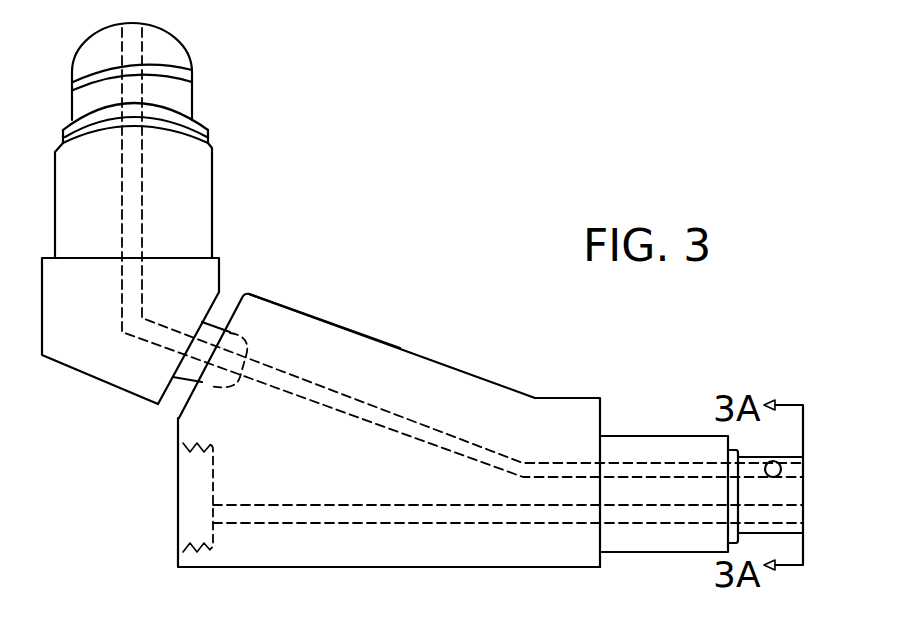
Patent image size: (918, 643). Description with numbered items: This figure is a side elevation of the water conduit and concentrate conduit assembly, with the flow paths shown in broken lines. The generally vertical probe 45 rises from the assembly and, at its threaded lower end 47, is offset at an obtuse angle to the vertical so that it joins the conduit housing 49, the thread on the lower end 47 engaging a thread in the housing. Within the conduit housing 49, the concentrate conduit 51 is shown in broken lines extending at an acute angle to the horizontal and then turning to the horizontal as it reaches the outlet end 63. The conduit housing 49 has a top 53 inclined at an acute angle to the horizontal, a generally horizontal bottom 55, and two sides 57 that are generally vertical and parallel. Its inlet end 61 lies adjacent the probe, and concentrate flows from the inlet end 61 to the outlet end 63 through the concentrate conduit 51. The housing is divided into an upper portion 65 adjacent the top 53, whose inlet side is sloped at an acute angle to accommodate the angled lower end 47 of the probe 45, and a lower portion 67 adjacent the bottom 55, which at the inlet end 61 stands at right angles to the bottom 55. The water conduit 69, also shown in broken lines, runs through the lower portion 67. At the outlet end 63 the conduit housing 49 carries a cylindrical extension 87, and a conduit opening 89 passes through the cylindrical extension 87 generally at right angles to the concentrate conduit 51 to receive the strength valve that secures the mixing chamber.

The probe 45 is at (197, 180).
The lower end of probe 47 is at (202, 272).
The conduit housing 49 is at (358, 352).
The concentrate conduit 51 is at (393, 413).
The top 53 is at (292, 307).
The bottom 55 is at (437, 557).
The sides 57 is at (240, 460).
The inlet end 61 is at (190, 404).
The outlet end 63 is at (803, 520).
The upper portion 65 is at (543, 410).
The lower portion 67 is at (483, 557).
The water conduit 69 is at (347, 525).
The cylindrical extension 87 is at (765, 457).
The conduit opening 89 is at (781, 469).